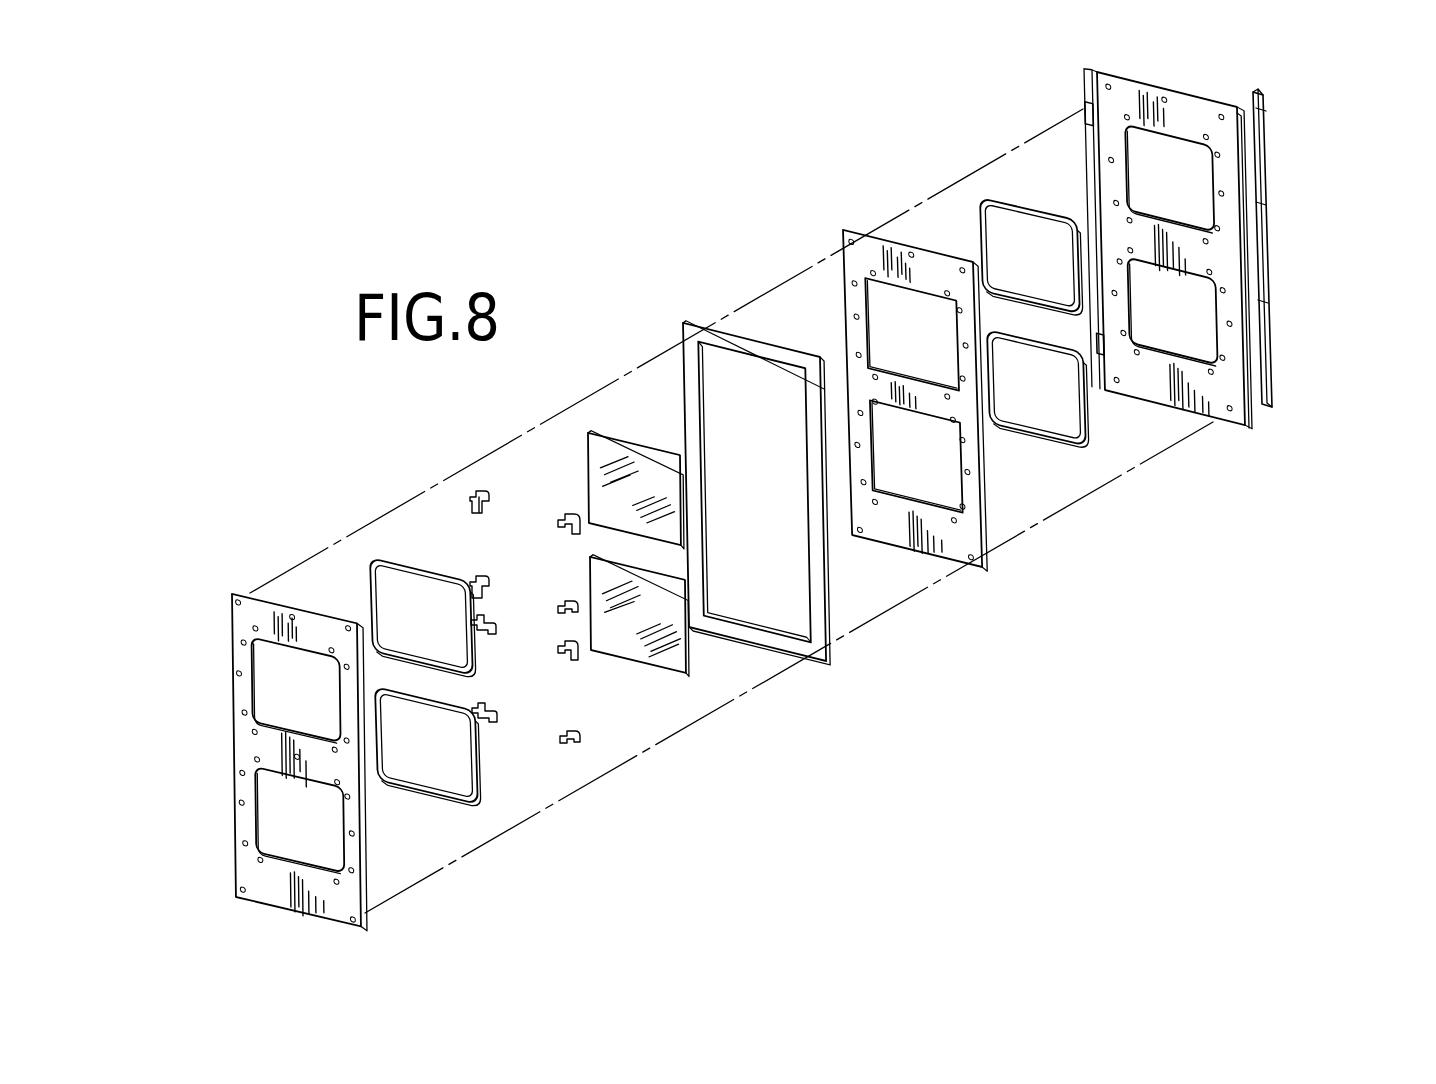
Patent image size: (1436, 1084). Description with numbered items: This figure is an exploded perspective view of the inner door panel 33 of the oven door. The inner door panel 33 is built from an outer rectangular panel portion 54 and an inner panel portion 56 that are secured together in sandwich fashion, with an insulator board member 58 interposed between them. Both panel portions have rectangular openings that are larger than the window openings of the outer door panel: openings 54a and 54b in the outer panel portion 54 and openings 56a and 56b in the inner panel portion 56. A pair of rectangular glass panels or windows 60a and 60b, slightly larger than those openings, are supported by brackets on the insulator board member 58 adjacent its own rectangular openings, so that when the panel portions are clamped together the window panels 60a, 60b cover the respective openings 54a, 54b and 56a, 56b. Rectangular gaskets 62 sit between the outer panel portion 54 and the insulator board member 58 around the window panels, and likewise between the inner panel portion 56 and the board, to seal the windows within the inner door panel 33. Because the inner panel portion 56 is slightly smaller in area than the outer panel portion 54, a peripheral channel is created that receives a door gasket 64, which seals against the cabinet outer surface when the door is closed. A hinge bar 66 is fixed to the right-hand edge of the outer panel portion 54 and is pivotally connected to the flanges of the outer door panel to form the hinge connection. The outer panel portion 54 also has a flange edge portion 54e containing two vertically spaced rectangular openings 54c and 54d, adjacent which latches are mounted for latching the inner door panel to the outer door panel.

The inner door panel 33 is at (1330, 191).
The outer rectangular panel portion 54 is at (1115, 256).
The rectangular opening 54a is at (1127, 152).
The rectangular opening 54b is at (1130, 305).
The rectangular opening 54c is at (1083, 118).
The rectangular opening 54d is at (1090, 348).
The flange edge portion 54e is at (1090, 80).
The inner panel portion 56 is at (324, 762).
The rectangular opening 56a is at (258, 690).
The rectangular opening 56b is at (258, 826).
The insulator board member 58 is at (957, 547).
The glass panel or window 60a is at (608, 457).
The glass panel or window 60b is at (613, 648).
The rectangular gasket 62 is at (415, 563).
The door gasket 64 is at (793, 653).
The hinge bar 66 is at (1275, 352).